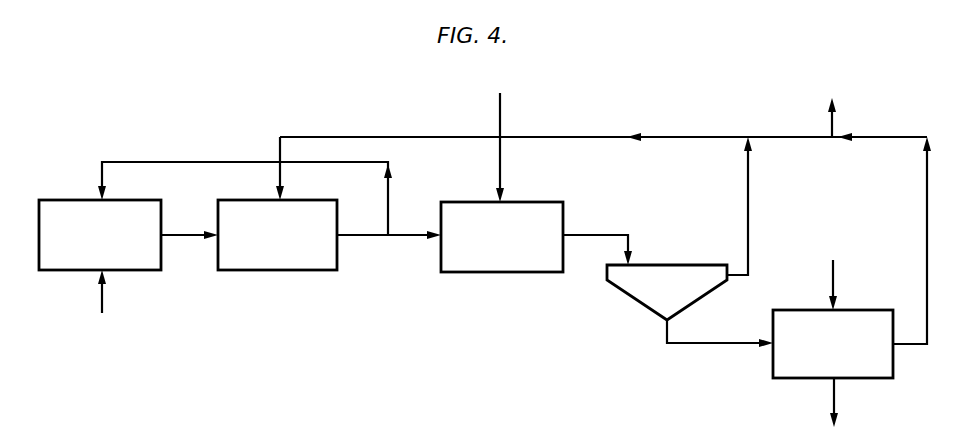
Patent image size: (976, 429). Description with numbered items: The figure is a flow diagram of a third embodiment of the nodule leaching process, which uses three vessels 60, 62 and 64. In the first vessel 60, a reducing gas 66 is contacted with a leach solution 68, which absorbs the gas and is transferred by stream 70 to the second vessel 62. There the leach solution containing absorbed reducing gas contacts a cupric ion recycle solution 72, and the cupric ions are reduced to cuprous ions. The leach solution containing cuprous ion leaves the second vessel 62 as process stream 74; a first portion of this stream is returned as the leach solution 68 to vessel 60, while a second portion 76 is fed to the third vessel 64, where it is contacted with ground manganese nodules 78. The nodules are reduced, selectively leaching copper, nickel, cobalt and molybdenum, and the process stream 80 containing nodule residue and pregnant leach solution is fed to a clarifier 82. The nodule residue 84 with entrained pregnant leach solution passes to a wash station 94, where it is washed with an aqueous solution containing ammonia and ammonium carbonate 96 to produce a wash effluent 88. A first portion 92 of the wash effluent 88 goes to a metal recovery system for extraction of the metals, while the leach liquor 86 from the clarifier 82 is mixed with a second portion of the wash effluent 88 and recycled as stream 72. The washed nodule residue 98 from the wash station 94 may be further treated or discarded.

The first vessel 60 is at (85, 260).
The second vessel 62 is at (263, 262).
The third vessel 64 is at (507, 262).
The reducing gas 66 is at (105, 302).
The leach solution 68 is at (133, 163).
The stream 70 is at (173, 235).
The cupric ion recycle solution 72 is at (688, 136).
The process stream 74 is at (355, 232).
The second portion of process stream 76 is at (398, 243).
The ground manganese nodules 78 is at (500, 104).
The process stream 80 is at (583, 235).
The clarifier 82 is at (650, 300).
The nodule residue 84 is at (680, 341).
The leach liquor 86 is at (748, 216).
The wash effluent 88 is at (927, 205).
The first portion of wash effluent 92 is at (833, 122).
The wash station 94 is at (815, 368).
The aqueous solution containing ammonia and ammonium carbonate 96 is at (830, 282).
The nodule residue 98 is at (836, 392).